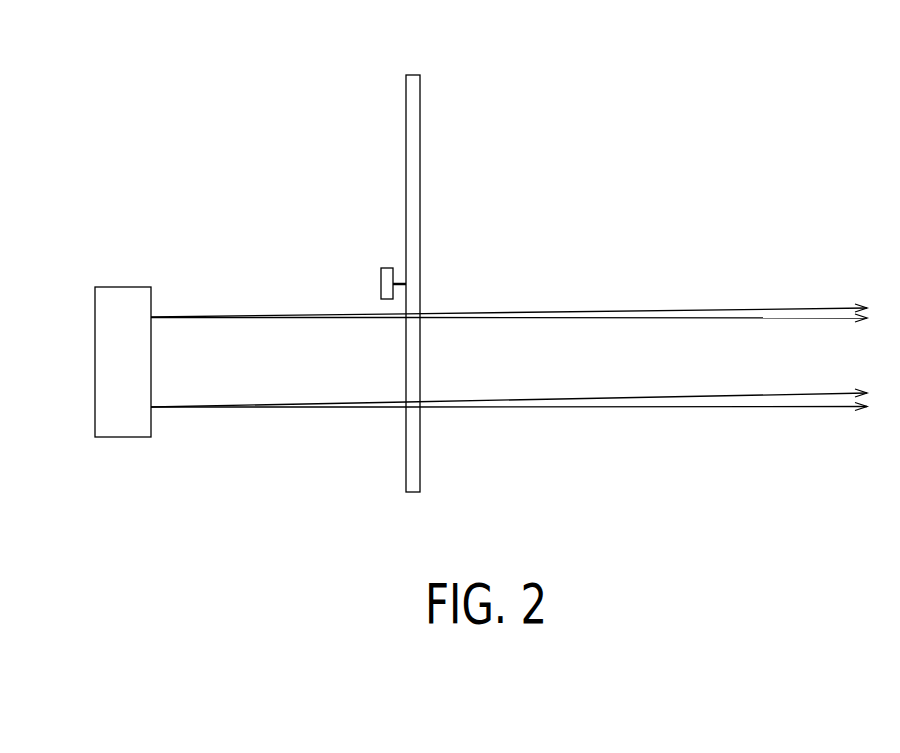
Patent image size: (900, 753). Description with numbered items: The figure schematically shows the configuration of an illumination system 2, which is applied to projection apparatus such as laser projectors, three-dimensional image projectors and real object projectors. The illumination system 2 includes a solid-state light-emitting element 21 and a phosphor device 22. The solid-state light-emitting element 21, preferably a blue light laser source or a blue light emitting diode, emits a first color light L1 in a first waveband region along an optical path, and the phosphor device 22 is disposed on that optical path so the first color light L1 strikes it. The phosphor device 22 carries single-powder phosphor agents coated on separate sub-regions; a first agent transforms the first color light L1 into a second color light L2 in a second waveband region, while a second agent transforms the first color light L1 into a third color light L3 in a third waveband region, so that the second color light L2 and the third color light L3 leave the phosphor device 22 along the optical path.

The illumination system 2 is at (150, 56).
The solid-state light-emitting element 21 is at (123, 287).
The phosphor device 22 is at (413, 75).
The first color light L1 is at (278, 364).
The second color light L2 is at (636, 336).
The third color light L3 is at (636, 385).